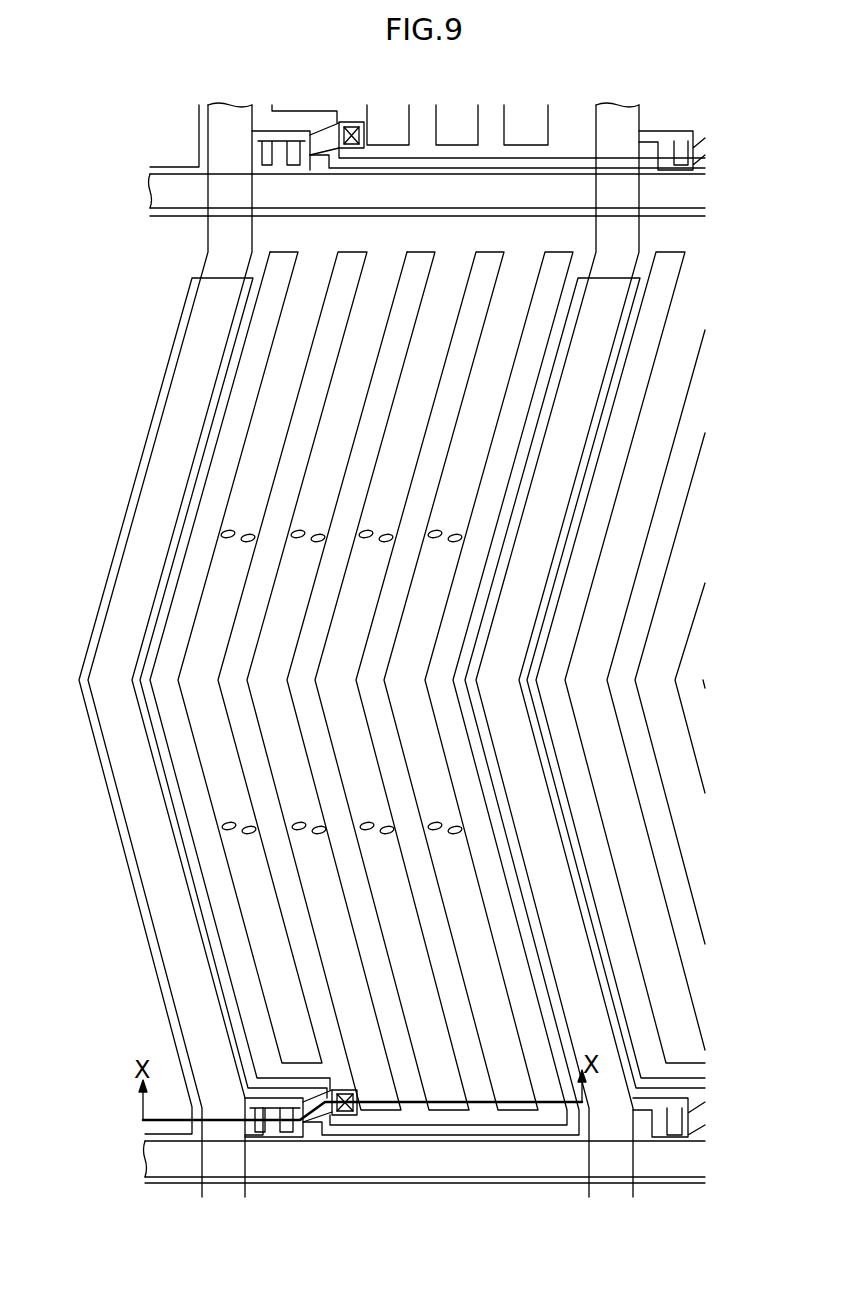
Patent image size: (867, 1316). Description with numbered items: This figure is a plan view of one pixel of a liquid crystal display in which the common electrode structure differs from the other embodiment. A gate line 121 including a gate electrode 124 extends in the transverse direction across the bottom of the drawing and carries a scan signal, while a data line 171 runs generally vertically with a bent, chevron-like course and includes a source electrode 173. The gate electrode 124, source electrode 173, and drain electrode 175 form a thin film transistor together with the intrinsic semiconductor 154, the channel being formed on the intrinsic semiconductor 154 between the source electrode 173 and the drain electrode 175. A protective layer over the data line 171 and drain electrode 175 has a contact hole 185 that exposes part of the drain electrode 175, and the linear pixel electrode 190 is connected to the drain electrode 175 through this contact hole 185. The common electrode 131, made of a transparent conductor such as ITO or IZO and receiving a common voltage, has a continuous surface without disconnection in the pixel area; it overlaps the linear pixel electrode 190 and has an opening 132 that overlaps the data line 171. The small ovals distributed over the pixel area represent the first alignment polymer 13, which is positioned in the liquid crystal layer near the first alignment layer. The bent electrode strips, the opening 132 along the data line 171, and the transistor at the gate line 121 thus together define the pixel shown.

The gate line 121 is at (548, 1182).
The gate electrode 124 is at (273, 1105).
The common electrode 131 is at (500, 562).
The opening 132 is at (612, 278).
The first alignment polymer 13 is at (372, 770).
The intrinsic semiconductor 154 is at (268, 1098).
The data line 171 is at (162, 573).
The source electrode 173 is at (258, 1150).
The drain electrode 175 is at (285, 1135).
The contact hole 185 is at (345, 1115).
The linear pixel electrode 190 is at (282, 558).